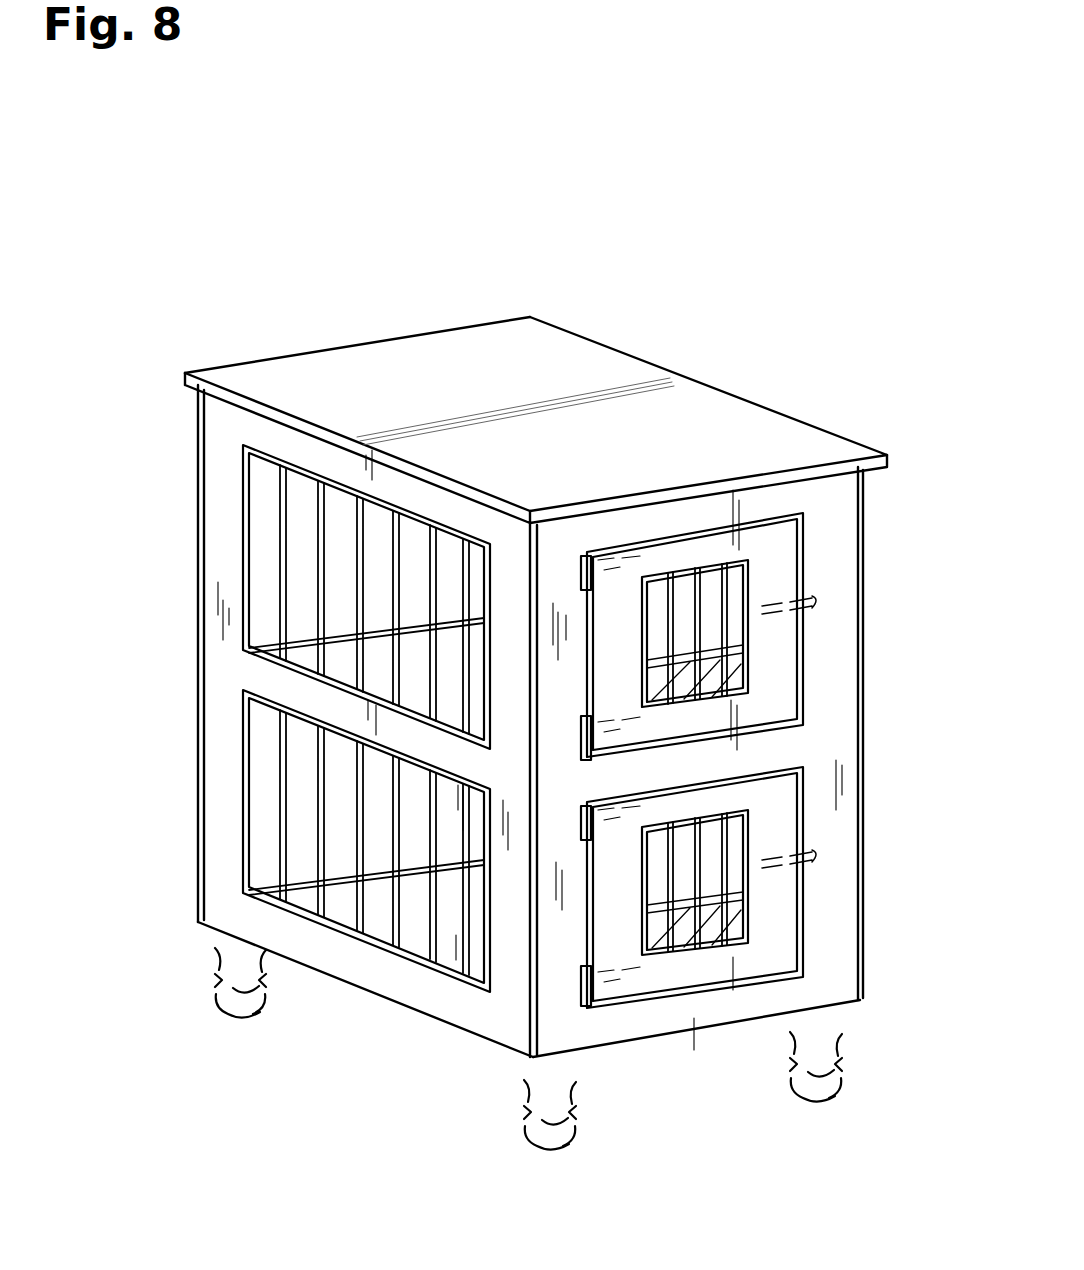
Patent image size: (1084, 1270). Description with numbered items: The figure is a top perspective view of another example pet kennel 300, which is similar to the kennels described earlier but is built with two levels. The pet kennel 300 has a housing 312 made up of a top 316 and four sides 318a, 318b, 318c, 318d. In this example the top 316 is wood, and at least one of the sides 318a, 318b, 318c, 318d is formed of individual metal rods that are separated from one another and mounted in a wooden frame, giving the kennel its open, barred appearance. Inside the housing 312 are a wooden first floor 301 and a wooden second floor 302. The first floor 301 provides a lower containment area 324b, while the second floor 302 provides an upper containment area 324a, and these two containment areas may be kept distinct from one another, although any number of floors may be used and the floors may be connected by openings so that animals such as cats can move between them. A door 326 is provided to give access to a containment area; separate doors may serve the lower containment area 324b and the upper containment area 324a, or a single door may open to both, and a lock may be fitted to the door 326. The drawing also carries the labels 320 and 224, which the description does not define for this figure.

The pet kennel 300 is at (757, 238).
The housing 312 is at (573, 327).
The top 316 is at (285, 375).
The side 318a is at (318, 957).
The side 318b is at (705, 1028).
The side 318c is at (861, 592).
The side 318d is at (318, 350).
The grille panel 320 is at (320, 577).
The second floor 302 is at (380, 663).
The first floor 301 is at (335, 902).
The upper containment area 324a is at (333, 785).
The lower containment area 324b is at (303, 622).
The door 326 is at (762, 977).
The hinge 224 is at (613, 837).